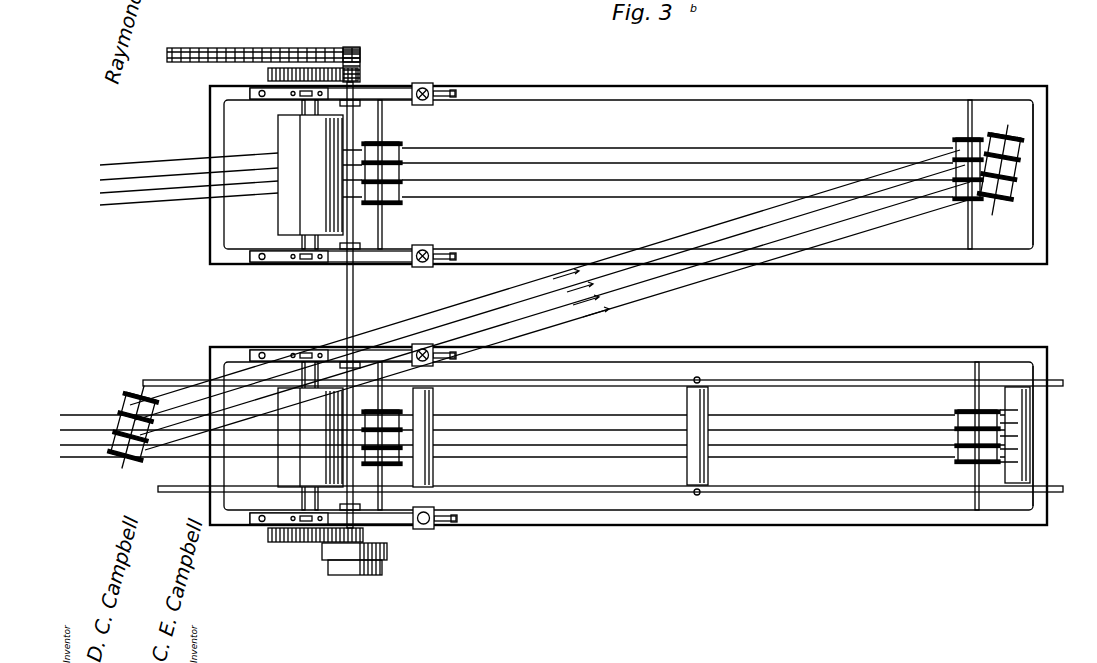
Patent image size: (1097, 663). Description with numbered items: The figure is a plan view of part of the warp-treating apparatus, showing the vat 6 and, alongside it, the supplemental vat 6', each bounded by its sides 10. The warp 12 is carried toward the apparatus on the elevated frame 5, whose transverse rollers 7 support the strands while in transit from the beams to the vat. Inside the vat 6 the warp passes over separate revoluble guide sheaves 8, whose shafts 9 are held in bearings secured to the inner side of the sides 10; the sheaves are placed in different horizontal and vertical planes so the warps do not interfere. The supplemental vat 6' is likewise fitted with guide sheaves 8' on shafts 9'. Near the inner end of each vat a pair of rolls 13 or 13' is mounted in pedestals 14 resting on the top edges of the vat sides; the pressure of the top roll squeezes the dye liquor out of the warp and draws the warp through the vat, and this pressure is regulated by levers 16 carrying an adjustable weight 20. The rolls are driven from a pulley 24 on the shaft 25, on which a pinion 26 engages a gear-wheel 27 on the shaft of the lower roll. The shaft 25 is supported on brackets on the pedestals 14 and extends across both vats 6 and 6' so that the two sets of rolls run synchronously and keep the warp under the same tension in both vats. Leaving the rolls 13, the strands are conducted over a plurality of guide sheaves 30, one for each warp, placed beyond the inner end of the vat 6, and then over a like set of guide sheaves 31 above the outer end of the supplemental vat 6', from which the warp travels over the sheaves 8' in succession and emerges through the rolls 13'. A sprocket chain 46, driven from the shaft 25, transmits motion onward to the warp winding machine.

The elevated frame 5 is at (184, 381).
The vat 6 is at (1048, 436).
The supplemental vat 6' is at (1052, 174).
The transverse rollers 7 is at (433, 405).
The guide sheaves 8 is at (681, 443).
The guide sheaves 8' is at (672, 164).
The shafts 9 is at (678, 436).
The shafts 9' is at (687, 174).
The sides of the vat 10 is at (858, 540).
The warp 12 is at (181, 158).
The rolls 13 is at (290, 436).
The rolls 13' is at (296, 174).
The pedestals 14 is at (297, 266).
The levers 16 is at (388, 80).
The weight 20 is at (422, 88).
The pulley 24 is at (380, 565).
The shaft 25 is at (347, 308).
The pinion 26 is at (358, 68).
The gear-wheel 27 is at (300, 68).
The guide sheaves 30 is at (132, 422).
The guide sheaves 31 is at (1020, 146).
The sprocket chain 46 is at (283, 57).